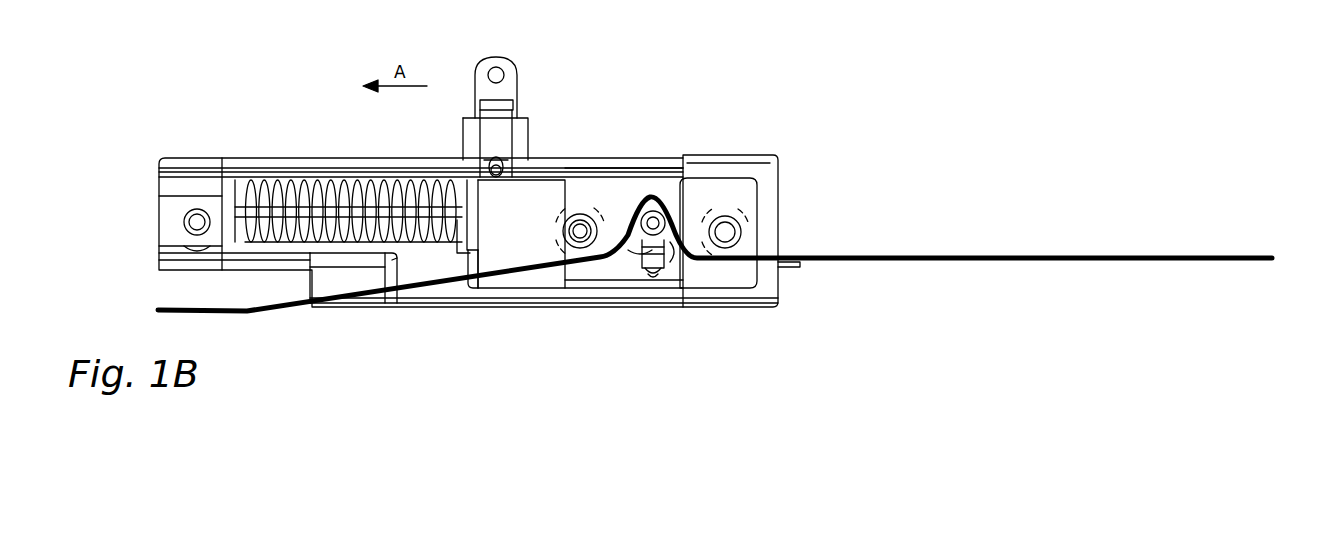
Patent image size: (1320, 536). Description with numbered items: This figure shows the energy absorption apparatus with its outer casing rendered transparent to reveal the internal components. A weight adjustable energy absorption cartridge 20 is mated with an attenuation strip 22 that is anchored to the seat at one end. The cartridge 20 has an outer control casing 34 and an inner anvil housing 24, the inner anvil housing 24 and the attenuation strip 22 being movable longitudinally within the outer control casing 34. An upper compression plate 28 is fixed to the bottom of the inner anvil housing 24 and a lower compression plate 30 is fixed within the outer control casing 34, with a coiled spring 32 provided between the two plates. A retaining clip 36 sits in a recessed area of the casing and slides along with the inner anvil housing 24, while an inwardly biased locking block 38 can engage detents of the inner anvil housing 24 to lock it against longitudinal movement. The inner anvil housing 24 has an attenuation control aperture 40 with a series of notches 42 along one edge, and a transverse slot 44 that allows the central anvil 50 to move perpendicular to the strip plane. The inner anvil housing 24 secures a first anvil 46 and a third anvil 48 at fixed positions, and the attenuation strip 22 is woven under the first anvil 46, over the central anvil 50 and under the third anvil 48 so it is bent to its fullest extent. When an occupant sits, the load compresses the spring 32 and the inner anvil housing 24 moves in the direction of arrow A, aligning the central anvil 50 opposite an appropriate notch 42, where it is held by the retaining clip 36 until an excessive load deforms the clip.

The weight adjustable energy absorption cartridge 20 is at (737, 138).
The attenuation strip 22 is at (230, 313).
The inner anvil housing 24 is at (533, 200).
The upper compression plate 28 is at (468, 200).
The lower compression plate 30 is at (232, 182).
The coiled spring 32 is at (297, 182).
The outer control casing 34 is at (765, 192).
The retaining clip 36 is at (673, 255).
The locking block 38 is at (505, 132).
The attenuation control aperture 40 is at (635, 252).
The notches 42 is at (638, 263).
The transverse slot 44 is at (643, 268).
The first anvil 46 is at (757, 240).
The third anvil 48 is at (600, 214).
The central anvil 50 is at (653, 210).